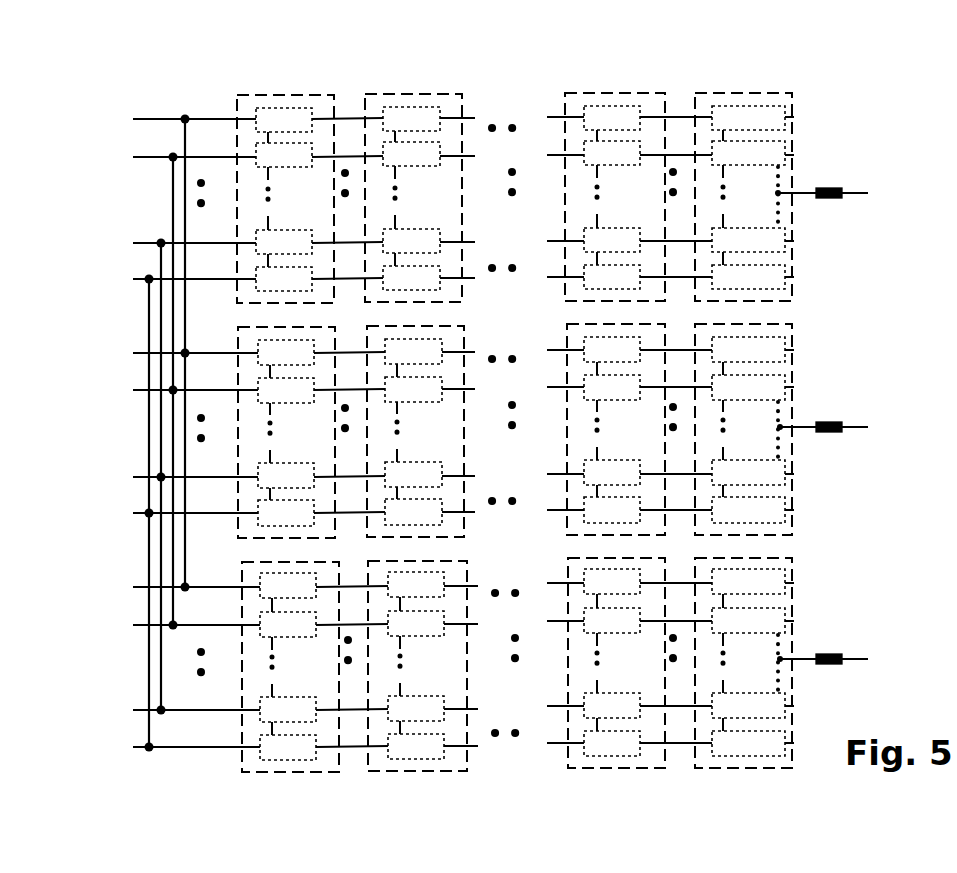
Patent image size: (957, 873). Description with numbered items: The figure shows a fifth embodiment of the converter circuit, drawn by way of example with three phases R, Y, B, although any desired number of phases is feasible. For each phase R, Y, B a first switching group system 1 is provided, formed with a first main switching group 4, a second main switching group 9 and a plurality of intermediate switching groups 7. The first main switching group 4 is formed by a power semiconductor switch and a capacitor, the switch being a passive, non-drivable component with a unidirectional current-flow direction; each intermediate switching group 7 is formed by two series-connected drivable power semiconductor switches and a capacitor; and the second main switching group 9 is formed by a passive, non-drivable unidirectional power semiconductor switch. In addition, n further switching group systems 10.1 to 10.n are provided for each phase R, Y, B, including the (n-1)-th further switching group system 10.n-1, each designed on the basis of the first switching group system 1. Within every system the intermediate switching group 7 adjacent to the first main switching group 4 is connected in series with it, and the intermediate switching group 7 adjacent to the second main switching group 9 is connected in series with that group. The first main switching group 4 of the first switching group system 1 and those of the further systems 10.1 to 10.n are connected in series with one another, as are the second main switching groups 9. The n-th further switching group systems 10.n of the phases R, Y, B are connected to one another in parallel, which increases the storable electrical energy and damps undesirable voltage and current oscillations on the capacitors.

The first switching group system 1 is at (792, 96).
The first main switching group 4 is at (597, 107).
The intermediate switching group 7 is at (620, 138).
The second main switching group 9 is at (638, 268).
The first further switching group system 10.1 is at (577, 93).
The n-th further switching group system 10.n is at (315, 93).
The (n-1)-th further switching group system 10.n-1 is at (425, 93).
The phase R is at (833, 180).
The phase Y is at (834, 423).
The phase B is at (834, 651).